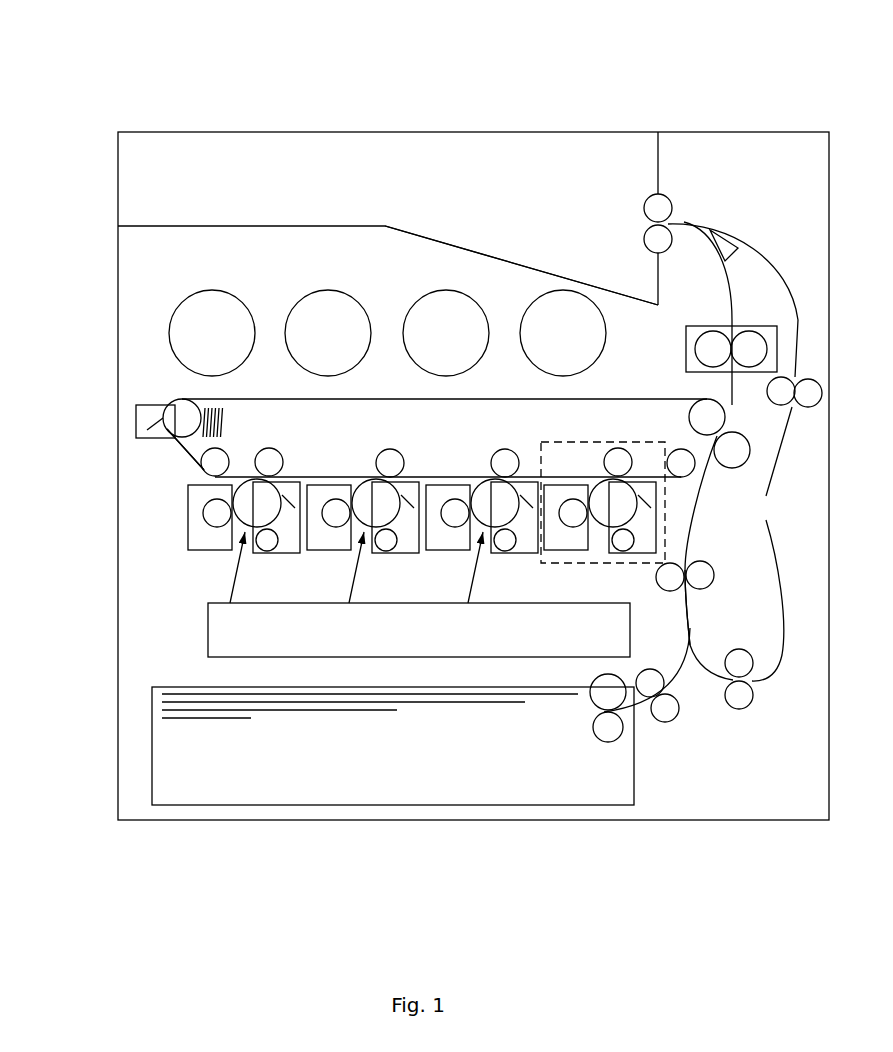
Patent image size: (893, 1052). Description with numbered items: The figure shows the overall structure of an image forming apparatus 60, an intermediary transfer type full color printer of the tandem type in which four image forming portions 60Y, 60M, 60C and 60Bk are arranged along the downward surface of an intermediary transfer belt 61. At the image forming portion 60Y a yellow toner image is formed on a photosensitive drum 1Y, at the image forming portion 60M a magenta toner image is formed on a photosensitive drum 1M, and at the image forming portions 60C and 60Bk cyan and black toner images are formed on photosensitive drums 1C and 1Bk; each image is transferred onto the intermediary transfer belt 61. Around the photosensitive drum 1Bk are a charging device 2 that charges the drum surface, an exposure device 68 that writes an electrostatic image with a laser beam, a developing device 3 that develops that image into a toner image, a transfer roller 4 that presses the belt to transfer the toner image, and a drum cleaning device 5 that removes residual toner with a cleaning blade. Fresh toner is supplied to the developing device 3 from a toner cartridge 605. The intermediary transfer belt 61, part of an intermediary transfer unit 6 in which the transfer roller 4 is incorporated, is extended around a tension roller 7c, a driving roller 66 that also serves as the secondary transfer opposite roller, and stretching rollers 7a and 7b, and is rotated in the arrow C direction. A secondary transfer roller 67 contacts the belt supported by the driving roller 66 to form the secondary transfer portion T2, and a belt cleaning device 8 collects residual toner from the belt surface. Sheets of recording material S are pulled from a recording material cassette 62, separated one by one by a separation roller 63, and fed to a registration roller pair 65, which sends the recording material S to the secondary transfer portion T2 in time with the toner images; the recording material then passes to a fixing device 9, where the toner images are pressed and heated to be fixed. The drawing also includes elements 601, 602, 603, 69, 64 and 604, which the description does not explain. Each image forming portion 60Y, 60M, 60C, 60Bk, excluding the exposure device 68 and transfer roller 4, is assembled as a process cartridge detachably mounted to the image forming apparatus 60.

The image forming apparatus 60 is at (628, 110).
The apparatus body partition 601 is at (481, 252).
The sheet conveyance guide 602 is at (732, 243).
The sheet conveyance path 603 is at (790, 287).
The toner cartridge 605 is at (547, 291).
The discharge roller pair 69 is at (646, 212).
The fixing device 9 is at (705, 326).
The driving roller 66 is at (705, 415).
The secondary transfer roller 67 is at (727, 468).
The secondary transfer portion T2 is at (745, 452).
The intermediary transfer unit 6 is at (290, 397).
The stretching roller 7a is at (217, 457).
The stretching roller 7b is at (680, 450).
The tension roller 7c is at (178, 410).
The belt cleaning device 8 is at (147, 416).
The intermediary transfer belt 61 is at (181, 440).
The arrow C direction C is at (350, 466).
The photosensitive drum 1Y is at (273, 490).
The photosensitive drum 1M is at (397, 490).
The photosensitive drum 1C is at (480, 490).
The photosensitive drum 1Bk is at (600, 482).
The image forming portion 60Y is at (238, 560).
The image forming portion 60M is at (357, 560).
The image forming portion 60C is at (477, 560).
The image forming portion 60Bk is at (601, 532).
The charging device 2 is at (622, 540).
The developing device 3 is at (563, 535).
The transfer roller 4 is at (618, 461).
The drum cleaning device 5 is at (645, 500).
The exposure device 68 is at (230, 632).
The recording material cassette 62 is at (635, 771).
The recording material S is at (482, 695).
The separation roller 63 is at (597, 698).
The sheet conveyance path 64 is at (689, 613).
The registration roller pair 65 is at (714, 575).
The reverse conveyance roller pair 604 is at (735, 700).